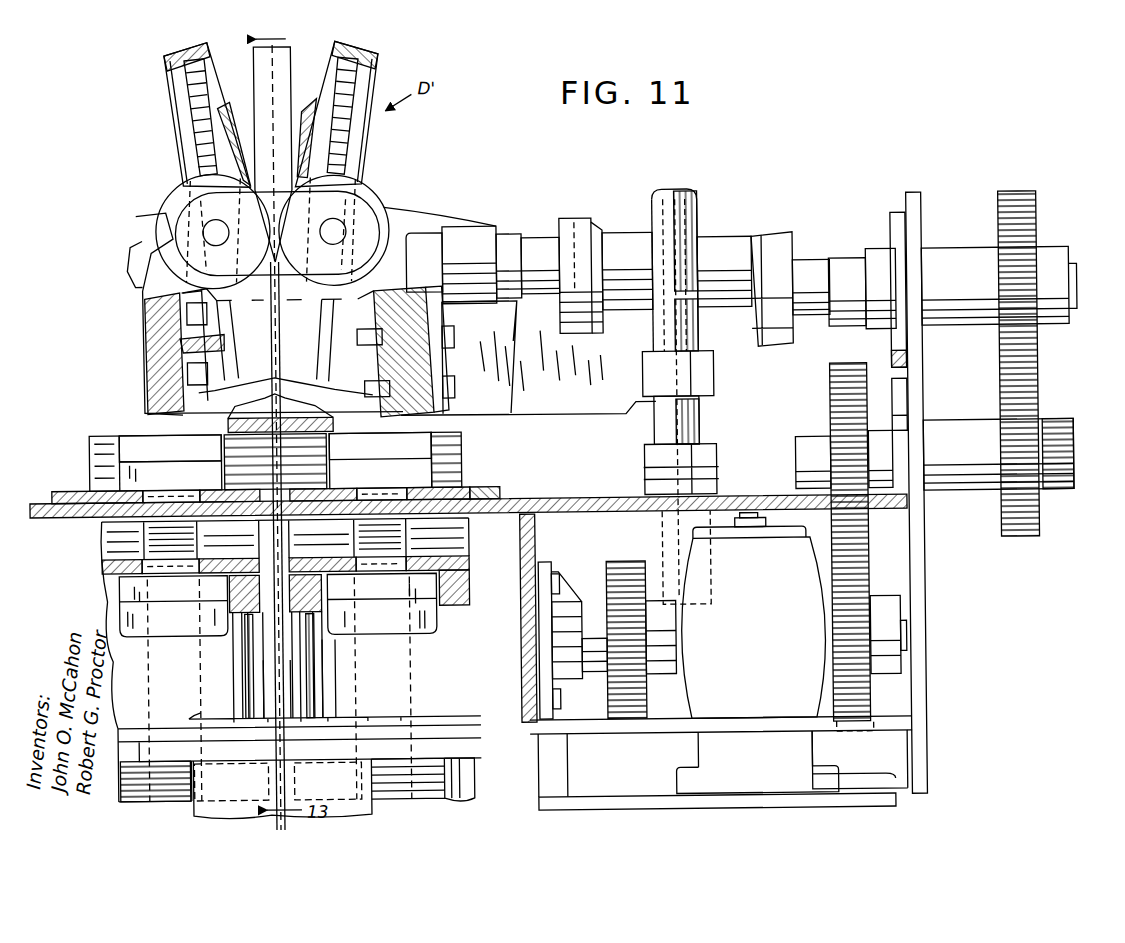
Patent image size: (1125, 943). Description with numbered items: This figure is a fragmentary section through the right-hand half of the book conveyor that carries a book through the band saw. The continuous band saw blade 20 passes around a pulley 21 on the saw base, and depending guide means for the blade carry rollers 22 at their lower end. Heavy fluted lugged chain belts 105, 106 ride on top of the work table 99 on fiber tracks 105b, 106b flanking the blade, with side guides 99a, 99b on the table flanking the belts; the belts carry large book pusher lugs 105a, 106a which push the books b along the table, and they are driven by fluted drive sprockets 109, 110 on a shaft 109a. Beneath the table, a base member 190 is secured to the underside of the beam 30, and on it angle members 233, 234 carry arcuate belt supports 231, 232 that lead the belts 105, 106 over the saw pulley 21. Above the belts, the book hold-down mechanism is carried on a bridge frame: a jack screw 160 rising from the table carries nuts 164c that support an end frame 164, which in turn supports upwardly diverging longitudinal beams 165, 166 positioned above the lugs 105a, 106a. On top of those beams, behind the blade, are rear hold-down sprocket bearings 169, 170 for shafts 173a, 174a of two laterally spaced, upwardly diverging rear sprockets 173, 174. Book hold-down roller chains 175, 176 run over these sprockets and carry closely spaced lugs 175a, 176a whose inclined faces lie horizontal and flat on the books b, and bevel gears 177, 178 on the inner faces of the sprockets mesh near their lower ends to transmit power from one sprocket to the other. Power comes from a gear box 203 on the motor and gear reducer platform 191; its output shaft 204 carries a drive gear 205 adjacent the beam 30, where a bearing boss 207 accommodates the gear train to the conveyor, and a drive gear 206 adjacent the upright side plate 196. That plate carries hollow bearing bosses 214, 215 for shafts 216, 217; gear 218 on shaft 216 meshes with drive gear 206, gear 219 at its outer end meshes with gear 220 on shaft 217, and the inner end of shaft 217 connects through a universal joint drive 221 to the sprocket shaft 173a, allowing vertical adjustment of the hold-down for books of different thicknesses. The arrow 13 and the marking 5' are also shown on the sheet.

The direction arrow 13 is at (280, 40).
The pulley 21 is at (286, 72).
The rollers 22 is at (170, 200).
The book hold-down roller chain 176 is at (165, 58).
The rear sprocket 174 is at (190, 88).
The bevel gear 178 is at (228, 104).
The book hold-down roller chain 175 is at (380, 54).
The rear sprocket 173 is at (378, 92).
The bevel gear 177 is at (303, 122).
The rear hold-down sprocket bearing 170 is at (160, 216).
The shaft 174a is at (130, 250).
The longitudinal beam 166 is at (150, 350).
The longitudinal beam 165 is at (430, 372).
The rear hold-down sprocket bearing 169 is at (434, 222).
The end frame 164 is at (622, 225).
The shaft 173a is at (578, 230).
The universal joint drive 221 is at (760, 240).
The hollow bearing boss 215 is at (868, 252).
The hollow bearing boss 214 is at (884, 380).
The side plate 196 is at (917, 195).
The shaft 217 is at (1075, 265).
The gear 220 is at (1020, 195).
The gear 219 is at (1018, 404).
The shaft 216 is at (1072, 492).
The gear 218 is at (830, 390).
The drive gear 206 is at (870, 708).
The jack screw 160 is at (690, 196).
The nut 164c is at (740, 226).
The work table 99 is at (575, 497).
The side guide 99b is at (58, 491).
The side guide 99a is at (492, 494).
The beam 30 is at (537, 540).
The book pusher lug 106a is at (125, 436).
The books b is at (96, 446).
The fiber track 106b is at (95, 480).
The lug 176a is at (235, 440).
The band saw blade 20 is at (272, 468).
The lug 175a is at (430, 440).
The book pusher lug 105a is at (446, 446).
The fiber track 105b is at (470, 488).
The fluted drive sprocket 110 is at (150, 522).
The fluted drive sprocket 109 is at (450, 540).
The arcuate belt support 231 is at (470, 586).
The arcuate belt support 232 is at (232, 606).
The shaft 109a is at (268, 672).
The angle member 234 is at (246, 708).
The angle member 233 is at (448, 690).
The fluted lugged chain belt 106 is at (165, 800).
The fluted lugged chain belt 105 is at (414, 803).
The slot 5' is at (282, 789).
The drive gear 205 is at (620, 562).
The bearing boss 207 is at (565, 680).
The gear box 203 is at (760, 650).
The output shaft 204 is at (905, 640).
The base member 190 is at (640, 730).
The motor and gear reducer platform 191 is at (640, 800).